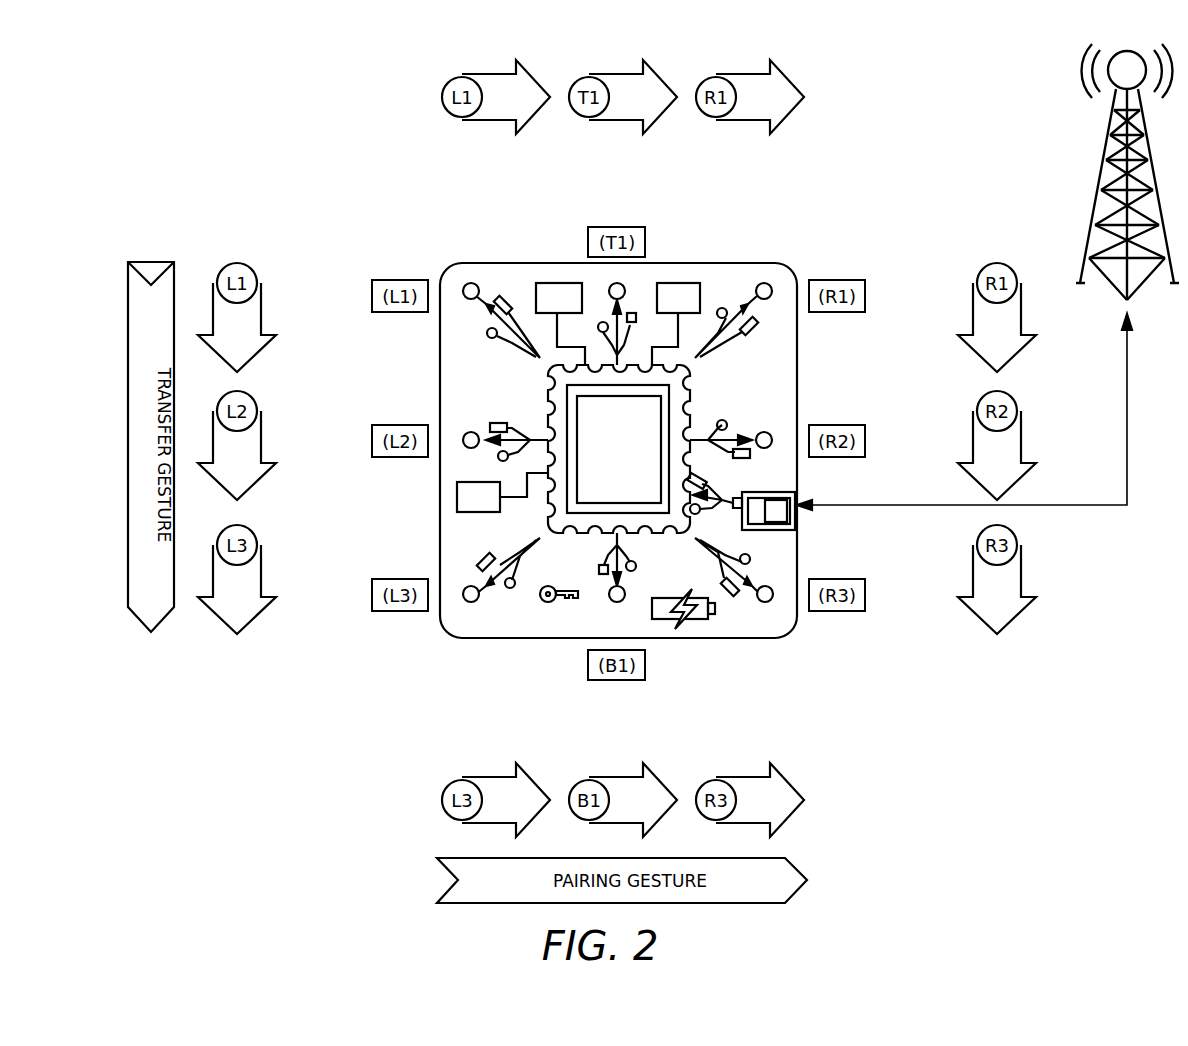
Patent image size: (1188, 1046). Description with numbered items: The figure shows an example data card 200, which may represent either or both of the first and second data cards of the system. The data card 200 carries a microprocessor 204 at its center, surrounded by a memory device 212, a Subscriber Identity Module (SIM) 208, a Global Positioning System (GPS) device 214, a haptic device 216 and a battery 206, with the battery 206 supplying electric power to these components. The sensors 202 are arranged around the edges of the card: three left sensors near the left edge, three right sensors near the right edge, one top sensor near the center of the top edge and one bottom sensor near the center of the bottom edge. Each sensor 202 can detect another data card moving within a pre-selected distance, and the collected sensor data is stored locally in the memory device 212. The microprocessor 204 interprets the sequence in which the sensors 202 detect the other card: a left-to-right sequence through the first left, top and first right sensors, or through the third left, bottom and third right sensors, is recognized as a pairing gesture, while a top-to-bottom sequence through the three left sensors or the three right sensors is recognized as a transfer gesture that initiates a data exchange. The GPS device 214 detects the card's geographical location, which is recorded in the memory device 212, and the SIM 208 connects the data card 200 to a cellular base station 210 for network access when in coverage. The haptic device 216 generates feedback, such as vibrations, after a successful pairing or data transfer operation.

The data card 200 is at (226, 67).
The sensors 202 is at (464, 274).
The microprocessor 204 is at (690, 410).
The battery 206 is at (702, 626).
The Subscriber Identity Module (SIM) 208 is at (790, 533).
The cellular base station 210 is at (1099, 184).
The memory device 212 is at (502, 492).
The Global Positioning System (GPS) device 214 is at (553, 281).
The haptic device 216 is at (676, 324).